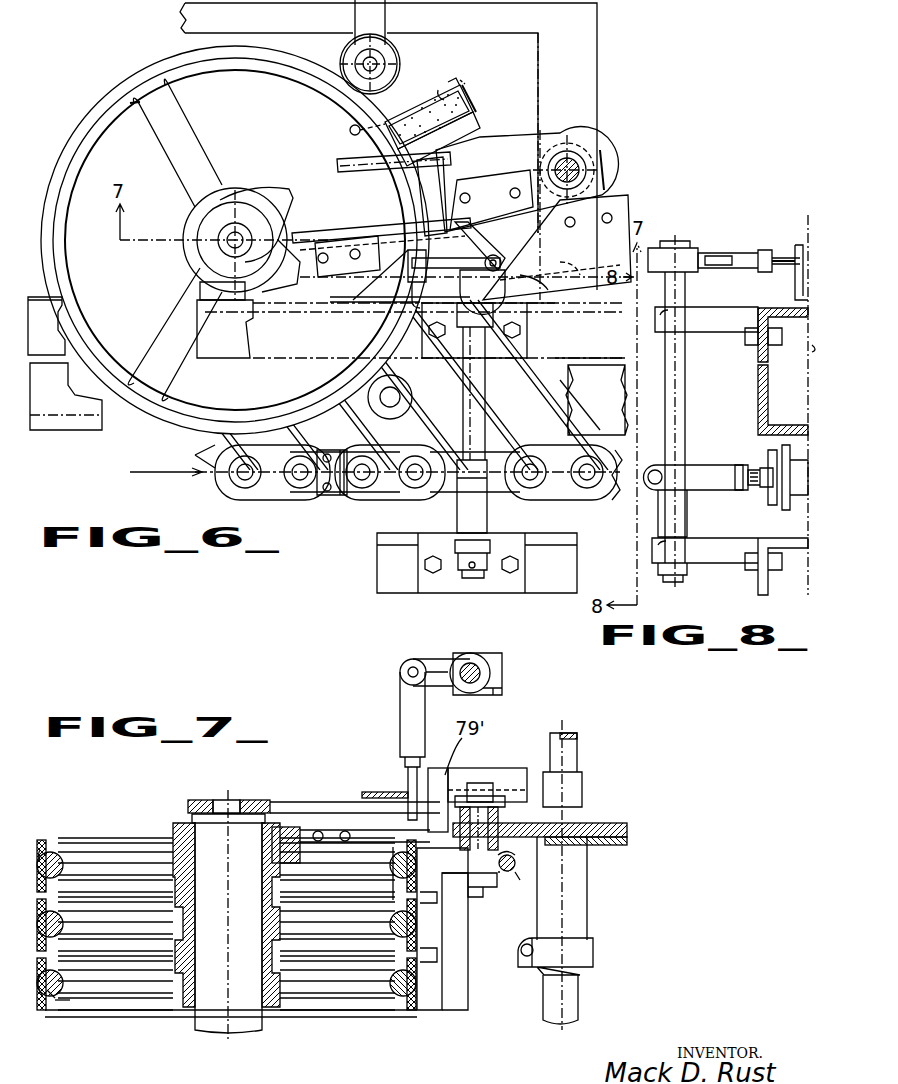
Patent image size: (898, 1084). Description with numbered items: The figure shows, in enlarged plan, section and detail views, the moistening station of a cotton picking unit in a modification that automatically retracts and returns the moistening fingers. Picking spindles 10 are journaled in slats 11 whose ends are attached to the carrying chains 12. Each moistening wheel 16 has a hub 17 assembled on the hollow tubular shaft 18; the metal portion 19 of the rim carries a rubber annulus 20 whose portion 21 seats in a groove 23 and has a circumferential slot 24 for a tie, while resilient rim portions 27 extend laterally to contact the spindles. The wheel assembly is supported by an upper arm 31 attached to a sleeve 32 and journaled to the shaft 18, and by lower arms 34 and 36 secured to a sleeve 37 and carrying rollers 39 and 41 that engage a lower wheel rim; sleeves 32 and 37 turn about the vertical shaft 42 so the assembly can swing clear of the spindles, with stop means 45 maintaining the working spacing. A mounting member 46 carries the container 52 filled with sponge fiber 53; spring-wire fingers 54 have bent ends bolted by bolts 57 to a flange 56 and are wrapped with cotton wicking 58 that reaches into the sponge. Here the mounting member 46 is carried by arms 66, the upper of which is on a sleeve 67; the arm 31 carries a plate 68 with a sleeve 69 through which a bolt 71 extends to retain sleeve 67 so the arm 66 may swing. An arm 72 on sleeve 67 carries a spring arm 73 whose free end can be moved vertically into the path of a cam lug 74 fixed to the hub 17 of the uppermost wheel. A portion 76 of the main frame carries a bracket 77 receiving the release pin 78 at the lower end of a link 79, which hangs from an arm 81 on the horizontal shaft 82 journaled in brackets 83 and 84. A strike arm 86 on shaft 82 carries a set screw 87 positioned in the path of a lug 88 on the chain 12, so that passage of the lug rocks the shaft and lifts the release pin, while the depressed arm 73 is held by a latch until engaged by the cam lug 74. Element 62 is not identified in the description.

In FIG. 6, the picking spindles 10 is at (245, 375).
In FIG. 6, the slats 11 is at (560, 440).
In FIG. 6, the carrying chains 12 is at (225, 498).
In FIG. 8, the carrying chains 12 is at (800, 425).
In FIG. 6, the wheels 16 is at (184, 112).
In FIG. 7, the wheels 16 is at (132, 1018).
In FIG. 6, the hub 17 is at (222, 192).
In FIG. 7, the hub 17 is at (175, 825).
In FIG. 7, the hollow tubular shaft 18 is at (212, 1015).
In FIG. 6, the metal portion of the wheel rim 19 is at (104, 126).
In FIG. 7, the metal portion of the wheel rim 19 is at (60, 855).
In FIG. 6, the annulus 20 is at (68, 144).
In FIG. 7, the annulus 20 is at (51, 831).
In FIG. 7, the portion of the annulus 21 is at (55, 1000).
In FIG. 7, the groove 23 is at (65, 993).
In FIG. 7, the circumferential slot 24 is at (40, 988).
In FIG. 7, the resilient and deformable rim portions 27 is at (38, 855).
In FIG. 6, the upper arm 31 is at (289, 198).
In FIG. 7, the upper arm 31 is at (310, 800).
In FIG. 6, the sleeve 32 is at (607, 146).
In FIG. 7, the sleeve 32 is at (582, 898).
In FIG. 6, the arm 34 is at (183, 16).
In FIG. 6, the arm 36 is at (455, 373).
In FIG. 6, the sleeve 37 is at (598, 165).
In FIG. 7, the sleeve 37 is at (570, 998).
In FIG. 6, the roller 39 is at (345, 56).
In FIG. 6, the roller 41 is at (404, 400).
In FIG. 6, the vertical shaft 42 is at (566, 155).
In FIG. 7, the vertical shaft 42 is at (577, 747).
In FIG. 6, the stop means 45 is at (243, 318).
In FIG. 6, the mounting member 46 is at (470, 137).
In FIG. 7, the mounting member 46 is at (460, 988).
In FIG. 6, the container 52 is at (470, 100).
In FIG. 6, the sponge fiber 53 is at (429, 117).
In FIG. 6, the fingers 54 is at (450, 80).
In FIG. 6, the flange 56 is at (438, 90).
In FIG. 6, the bolts 57 is at (463, 80).
In FIG. 6, the cotton wicking 58 is at (352, 132).
In FIG. 6, the bar 62 is at (340, 163).
In FIG. 7, the bar 62 is at (372, 965).
In FIG. 6, the arms 66 is at (478, 165).
In FIG. 7, the arms 66 is at (440, 862).
In FIG. 6, the sleeve 67 is at (530, 272).
In FIG. 7, the sleeve 67 is at (510, 872).
In FIG. 6, the plate 68 is at (581, 263).
In FIG. 7, the plate 68 is at (512, 778).
In FIG. 7, the sleeve 69 is at (483, 885).
In FIG. 6, the bolt 71 is at (458, 286).
In FIG. 7, the bolt 71 is at (480, 782).
In FIG. 6, the arm 72 is at (618, 228).
In FIG. 7, the arm 72 is at (612, 823).
In FIG. 6, the spring arm 73 is at (368, 232).
In FIG. 7, the spring arm 73 is at (365, 830).
In FIG. 6, the cam lug 74 is at (312, 240).
In FIG. 7, the cam lug 74 is at (290, 840).
In FIG. 6, the portion of the main frame 76 is at (568, 366).
In FIG. 8, the portion of the main frame 76 is at (768, 352).
In FIG. 6, the bracket 77 is at (360, 288).
In FIG. 8, the bracket 77 is at (795, 250).
In FIG. 7, the bracket 77 is at (370, 792).
In FIG. 6, the release pin 78 is at (410, 282).
In FIG. 8, the release pin 78 is at (780, 264).
In FIG. 7, the release pin 78 is at (430, 772).
In FIG. 6, the link 79 is at (405, 248).
In FIG. 8, the link 79 is at (730, 253).
In FIG. 7, the link 79 is at (402, 700).
In FIG. 6, the arm 81 is at (470, 240).
In FIG. 8, the arm 81 is at (688, 252).
In FIG. 7, the arm 81 is at (434, 658).
In FIG. 6, the horizontal shaft 82 is at (478, 421).
In FIG. 8, the horizontal shaft 82 is at (684, 379).
In FIG. 7, the horizontal shaft 82 is at (463, 688).
In FIG. 6, the bracket 83 is at (530, 342).
In FIG. 8, the bracket 83 is at (699, 330).
In FIG. 6, the bracket 84 is at (508, 545).
In FIG. 8, the bracket 84 is at (705, 560).
In FIG. 6, the strike arm 86 is at (462, 508).
In FIG. 8, the strike arm 86 is at (695, 470).
In FIG. 8, the set screw 87 is at (750, 462).
In FIG. 6, the lug 88 is at (335, 496).
In FIG. 8, the lug 88 is at (768, 492).